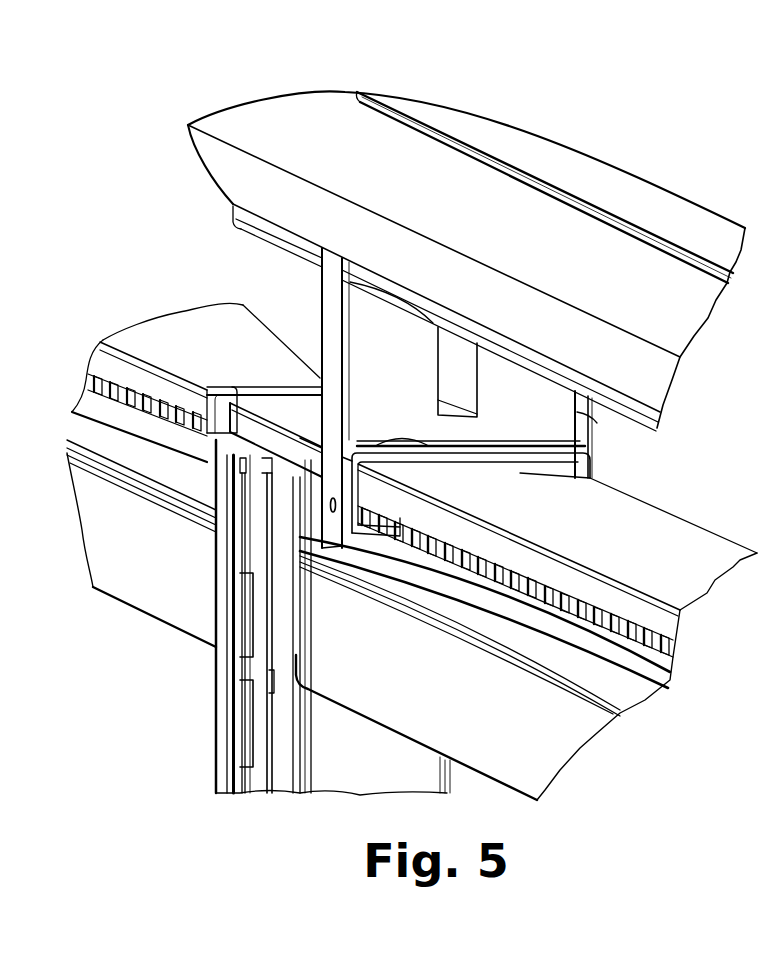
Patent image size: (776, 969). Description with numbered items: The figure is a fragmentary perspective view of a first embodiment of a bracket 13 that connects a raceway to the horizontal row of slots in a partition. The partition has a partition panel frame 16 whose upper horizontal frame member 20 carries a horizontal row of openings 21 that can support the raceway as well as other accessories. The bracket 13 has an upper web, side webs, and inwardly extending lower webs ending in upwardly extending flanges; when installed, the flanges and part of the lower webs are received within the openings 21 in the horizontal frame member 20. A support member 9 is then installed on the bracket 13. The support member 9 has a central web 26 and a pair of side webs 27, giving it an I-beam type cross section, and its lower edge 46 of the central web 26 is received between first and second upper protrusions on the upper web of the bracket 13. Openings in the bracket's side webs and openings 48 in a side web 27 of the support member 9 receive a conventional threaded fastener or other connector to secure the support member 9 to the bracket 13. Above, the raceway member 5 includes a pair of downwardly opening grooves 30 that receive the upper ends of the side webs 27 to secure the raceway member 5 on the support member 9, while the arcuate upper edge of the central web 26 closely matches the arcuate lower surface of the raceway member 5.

The raceway member 5 is at (555, 158).
The downwardly opening grooves 30 is at (248, 226).
The central web 26 is at (387, 357).
The side webs 27 is at (327, 378).
The support member 9 is at (597, 423).
The bracket 13 is at (597, 452).
The lower edge 46 is at (453, 440).
The openings 48 is at (330, 505).
The partition panel frame 16 is at (215, 730).
The upper horizontal frame member 20 is at (533, 723).
The openings 21 is at (612, 625).